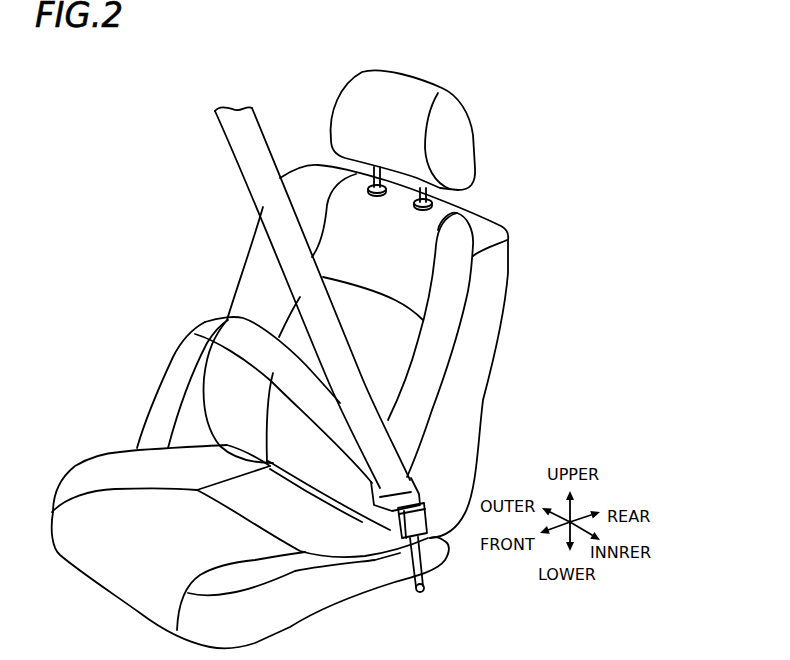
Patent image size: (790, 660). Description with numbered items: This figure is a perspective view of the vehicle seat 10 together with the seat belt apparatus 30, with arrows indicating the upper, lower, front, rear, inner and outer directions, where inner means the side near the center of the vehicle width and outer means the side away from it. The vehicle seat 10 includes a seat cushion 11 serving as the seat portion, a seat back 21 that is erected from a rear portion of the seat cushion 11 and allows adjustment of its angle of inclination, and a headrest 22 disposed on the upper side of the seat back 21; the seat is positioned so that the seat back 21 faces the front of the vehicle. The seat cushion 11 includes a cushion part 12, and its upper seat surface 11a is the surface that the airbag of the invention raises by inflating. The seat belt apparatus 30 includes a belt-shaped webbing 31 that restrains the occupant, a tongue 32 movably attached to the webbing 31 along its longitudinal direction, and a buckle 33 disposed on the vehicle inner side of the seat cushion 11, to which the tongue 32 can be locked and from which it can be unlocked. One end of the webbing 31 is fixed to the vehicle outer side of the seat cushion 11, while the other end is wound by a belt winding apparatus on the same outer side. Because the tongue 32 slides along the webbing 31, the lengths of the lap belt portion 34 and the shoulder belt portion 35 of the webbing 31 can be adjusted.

The vehicle seat 10 is at (512, 412).
The seat cushion 11 is at (246, 529).
The seat surface 11a is at (228, 553).
The cushion part 12 is at (82, 477).
The seat back 21 is at (473, 363).
The headrest 22 is at (452, 137).
The seat belt apparatus 30 is at (150, 358).
The webbing 31 is at (162, 237).
The tongue 32 is at (418, 491).
The buckle 33 is at (428, 508).
The lap belt portion 34 is at (197, 335).
The shoulder belt portion 35 is at (283, 235).